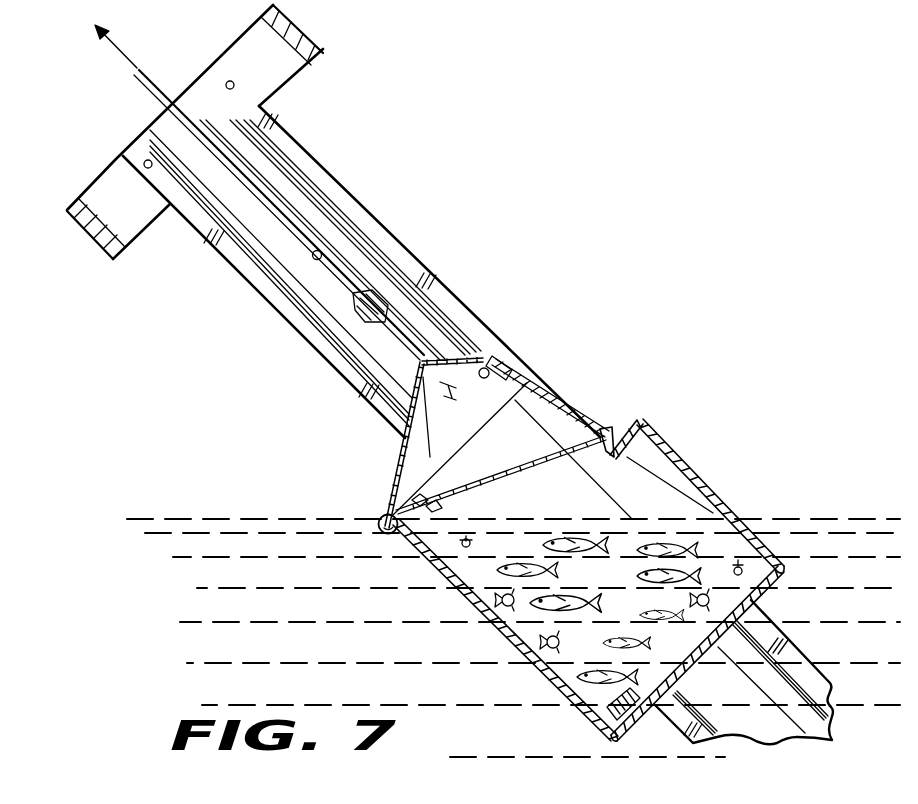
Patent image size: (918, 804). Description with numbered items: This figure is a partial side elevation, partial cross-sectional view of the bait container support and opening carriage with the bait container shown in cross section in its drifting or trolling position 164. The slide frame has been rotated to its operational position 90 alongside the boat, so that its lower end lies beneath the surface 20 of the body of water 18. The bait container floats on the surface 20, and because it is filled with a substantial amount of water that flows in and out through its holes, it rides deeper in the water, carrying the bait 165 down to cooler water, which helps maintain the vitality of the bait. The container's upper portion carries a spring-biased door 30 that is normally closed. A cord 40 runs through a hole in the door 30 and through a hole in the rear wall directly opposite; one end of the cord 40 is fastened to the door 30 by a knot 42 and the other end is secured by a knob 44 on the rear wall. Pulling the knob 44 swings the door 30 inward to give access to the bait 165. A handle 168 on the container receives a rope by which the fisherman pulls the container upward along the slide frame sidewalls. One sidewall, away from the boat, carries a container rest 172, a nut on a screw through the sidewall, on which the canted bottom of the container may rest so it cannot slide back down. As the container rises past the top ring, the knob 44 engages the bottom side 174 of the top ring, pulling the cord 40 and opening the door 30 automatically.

The body of water 18 is at (339, 656).
The surface 20 is at (243, 519).
The door 30 is at (300, 25).
The cord 40 is at (524, 462).
The knot 42 is at (612, 428).
The knob 44 is at (380, 516).
The operational position 90 is at (804, 638).
The drifting or trolling position 164 is at (760, 488).
The bait 165 is at (532, 562).
The handle 168 is at (150, 90).
The container rest 172 is at (320, 253).
The bottom side of top ring 174 is at (120, 258).